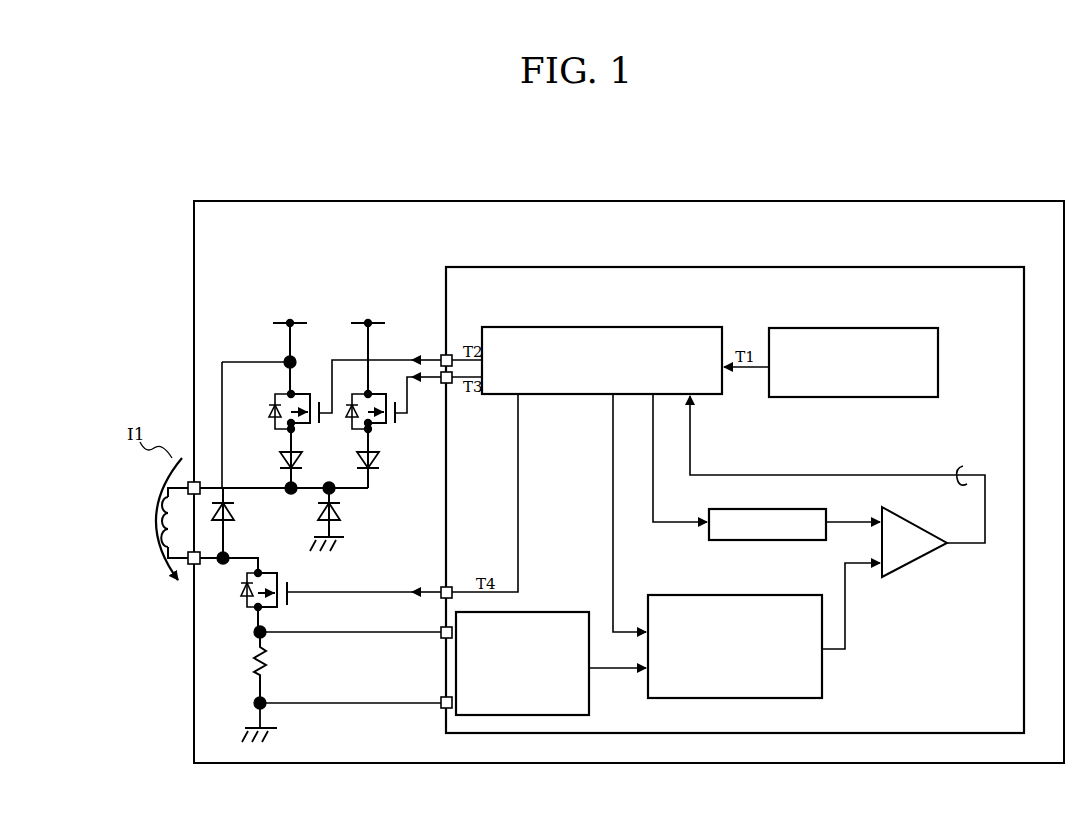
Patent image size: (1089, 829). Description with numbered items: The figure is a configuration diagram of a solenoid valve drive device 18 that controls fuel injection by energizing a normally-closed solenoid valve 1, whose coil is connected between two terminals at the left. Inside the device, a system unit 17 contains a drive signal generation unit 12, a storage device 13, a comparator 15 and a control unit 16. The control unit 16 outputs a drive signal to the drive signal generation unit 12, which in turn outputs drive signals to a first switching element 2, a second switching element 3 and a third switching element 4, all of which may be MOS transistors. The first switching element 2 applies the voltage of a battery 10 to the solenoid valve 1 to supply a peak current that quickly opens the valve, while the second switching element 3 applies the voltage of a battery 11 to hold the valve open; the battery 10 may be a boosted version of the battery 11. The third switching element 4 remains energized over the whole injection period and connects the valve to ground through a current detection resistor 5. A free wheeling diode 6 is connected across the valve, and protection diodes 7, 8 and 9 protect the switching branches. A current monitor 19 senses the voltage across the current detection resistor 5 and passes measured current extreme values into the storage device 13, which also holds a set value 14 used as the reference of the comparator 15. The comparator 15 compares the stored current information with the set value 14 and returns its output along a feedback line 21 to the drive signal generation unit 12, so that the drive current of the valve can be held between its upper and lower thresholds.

The solenoid valve 1 is at (153, 510).
The first switching element 2 is at (278, 404).
The second switching element 3 is at (380, 431).
The third switching element 4 is at (297, 602).
The current detection resistor 5 is at (271, 665).
The free wheeling diode 6 is at (238, 519).
The protection diode 7 is at (280, 464).
The protection diode 8 is at (345, 528).
The protection diode 9 is at (378, 471).
The battery 10 is at (274, 304).
The battery 11 is at (356, 304).
The drive signal generation unit 12 is at (595, 324).
The storage device 13 is at (707, 595).
The set value 14 is at (759, 515).
The comparator 15 is at (904, 567).
The control unit 16 is at (864, 326).
The system unit 17 is at (524, 267).
The solenoid valve drive device 18 is at (471, 200).
The current monitor 19 is at (584, 610).
The feedback signal line 21 is at (946, 467).